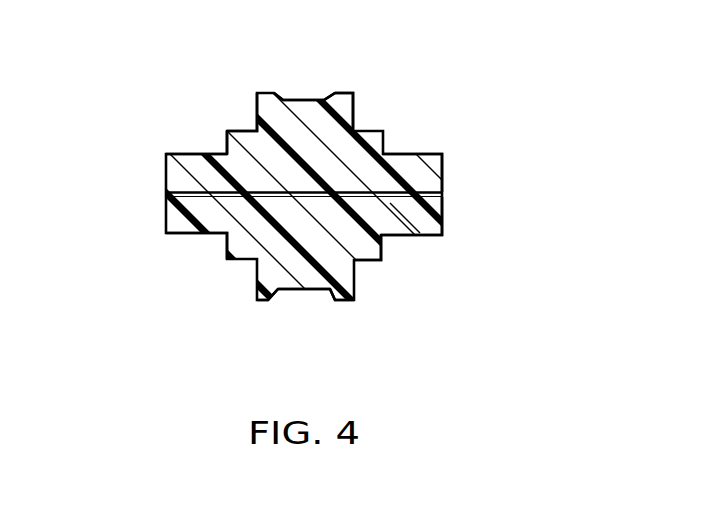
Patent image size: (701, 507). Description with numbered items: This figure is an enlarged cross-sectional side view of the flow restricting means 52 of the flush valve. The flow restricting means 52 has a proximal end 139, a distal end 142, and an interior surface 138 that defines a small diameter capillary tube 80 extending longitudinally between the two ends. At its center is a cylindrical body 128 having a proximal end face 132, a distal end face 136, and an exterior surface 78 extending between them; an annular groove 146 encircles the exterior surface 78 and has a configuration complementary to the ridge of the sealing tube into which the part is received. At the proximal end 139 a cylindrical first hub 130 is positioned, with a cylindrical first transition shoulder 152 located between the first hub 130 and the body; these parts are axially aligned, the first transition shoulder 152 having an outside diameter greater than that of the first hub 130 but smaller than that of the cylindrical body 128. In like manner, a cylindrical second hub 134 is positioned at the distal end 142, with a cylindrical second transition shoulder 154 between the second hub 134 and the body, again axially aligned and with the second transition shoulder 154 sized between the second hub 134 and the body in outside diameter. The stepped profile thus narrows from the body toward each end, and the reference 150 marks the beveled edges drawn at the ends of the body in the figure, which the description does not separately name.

The flow restricting means 52 is at (476, 63).
The cylindrical body 128 is at (286, 91).
The annular groove 146 is at (312, 91).
The distal end face 136 is at (356, 107).
The proximal end face 132 is at (257, 106).
The first transition shoulder 152 is at (225, 143).
The proximal end 139 is at (172, 156).
The distal end 142 is at (443, 157).
The interior surface 138 is at (444, 211).
The second hub 134 is at (440, 236).
The capillary tube 80 is at (414, 203).
The second transition shoulder 154 is at (384, 248).
The first hub 130 is at (188, 235).
The bevel 150 is at (277, 300).
The exterior surface 78 is at (294, 292).